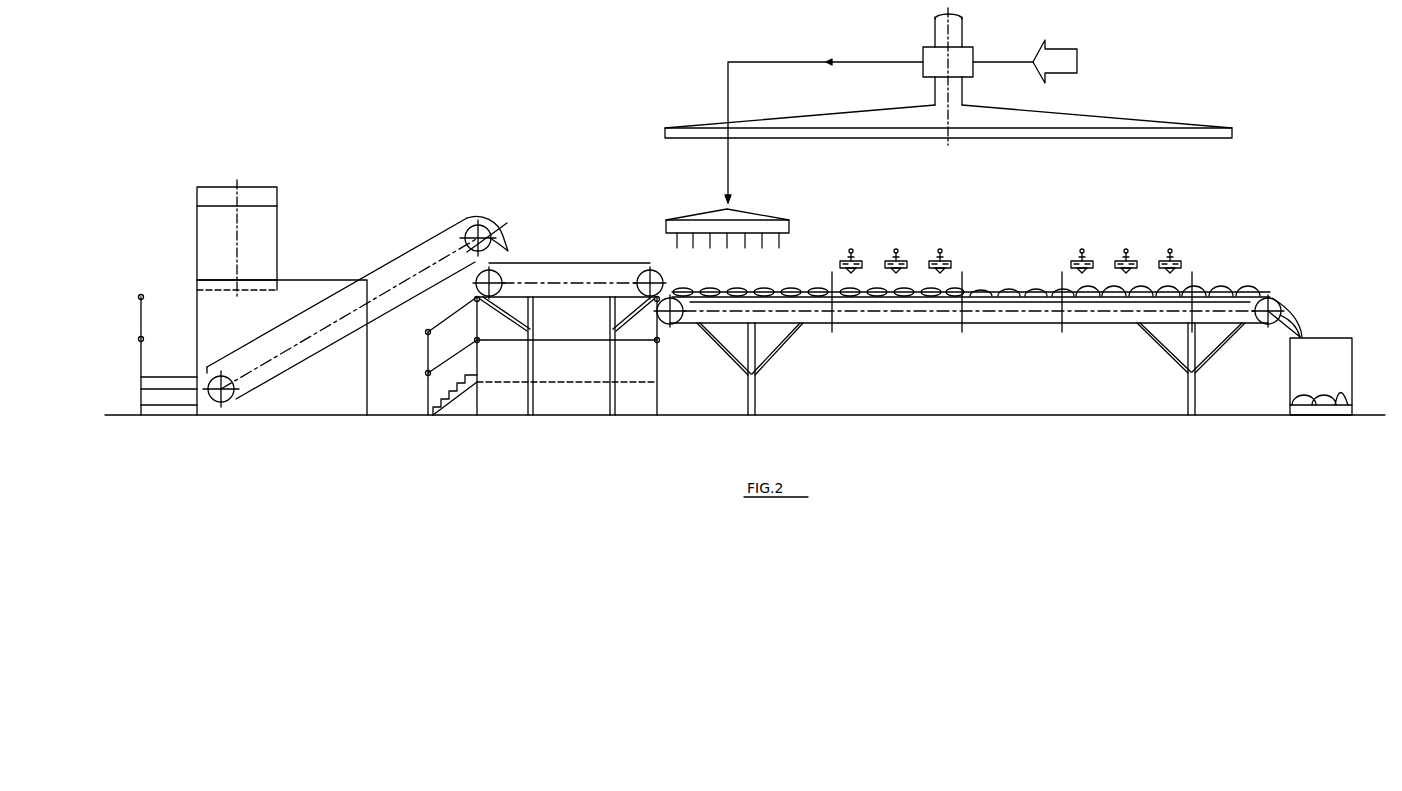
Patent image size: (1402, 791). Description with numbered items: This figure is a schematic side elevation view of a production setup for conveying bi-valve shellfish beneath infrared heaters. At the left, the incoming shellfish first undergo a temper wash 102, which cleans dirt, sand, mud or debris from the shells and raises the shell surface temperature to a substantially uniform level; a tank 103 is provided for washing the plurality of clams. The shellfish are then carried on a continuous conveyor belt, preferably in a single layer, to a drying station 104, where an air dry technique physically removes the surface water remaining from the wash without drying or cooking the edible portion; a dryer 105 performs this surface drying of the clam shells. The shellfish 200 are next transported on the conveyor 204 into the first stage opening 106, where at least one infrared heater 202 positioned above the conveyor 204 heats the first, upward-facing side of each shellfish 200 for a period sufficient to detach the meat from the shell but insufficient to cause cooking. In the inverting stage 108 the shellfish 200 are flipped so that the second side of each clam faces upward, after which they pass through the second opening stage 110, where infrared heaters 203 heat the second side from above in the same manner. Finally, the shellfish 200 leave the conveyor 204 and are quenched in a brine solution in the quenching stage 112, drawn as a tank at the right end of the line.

The temper wash 102 is at (324, 315).
The tank 103 is at (237, 251).
The drying station 104 is at (782, 206).
The dryer 105 is at (666, 227).
The first stage opening 106 is at (962, 244).
The inverting stage 108 is at (1062, 244).
The second opening stage 110 is at (1192, 244).
The quenching stage 112 is at (1321, 376).
The shellfish 200 is at (986, 343).
The infrared heater 202 is at (906, 259).
The infrared heater 203 is at (1137, 259).
The conveyor 204 is at (673, 320).